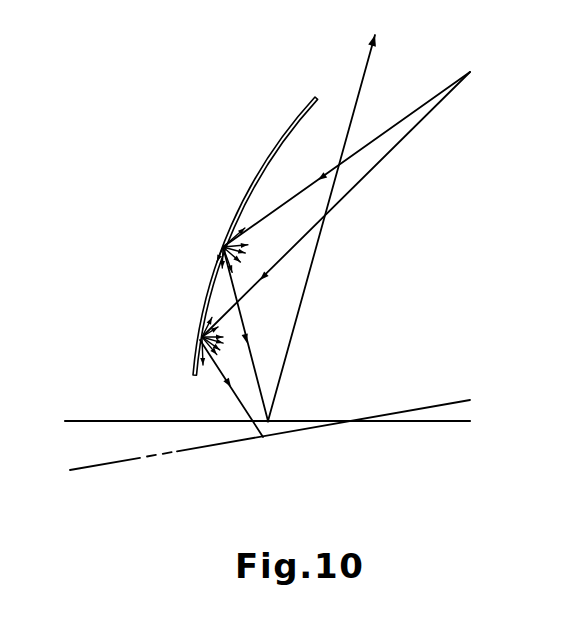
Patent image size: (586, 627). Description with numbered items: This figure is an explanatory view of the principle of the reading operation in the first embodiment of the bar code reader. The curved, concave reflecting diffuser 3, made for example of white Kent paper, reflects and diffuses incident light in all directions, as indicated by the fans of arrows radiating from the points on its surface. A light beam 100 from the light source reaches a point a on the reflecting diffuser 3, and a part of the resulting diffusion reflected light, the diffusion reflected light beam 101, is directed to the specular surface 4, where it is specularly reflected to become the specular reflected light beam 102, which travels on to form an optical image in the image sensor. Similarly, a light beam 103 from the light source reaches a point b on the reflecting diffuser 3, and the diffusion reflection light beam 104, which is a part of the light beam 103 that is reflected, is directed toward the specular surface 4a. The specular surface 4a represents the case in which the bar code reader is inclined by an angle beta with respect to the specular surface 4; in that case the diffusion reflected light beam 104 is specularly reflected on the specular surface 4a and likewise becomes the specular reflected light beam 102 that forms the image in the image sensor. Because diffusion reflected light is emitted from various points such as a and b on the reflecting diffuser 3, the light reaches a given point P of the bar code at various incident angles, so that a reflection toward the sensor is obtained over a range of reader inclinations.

The reflecting diffuser 3 is at (258, 165).
The light beam 100 is at (418, 108).
The diffusion reflected light beam 101 is at (255, 363).
The specular reflected light beam 102 is at (368, 60).
The light beam 103 is at (387, 157).
The diffusion reflection light beam 104 is at (237, 397).
The specular surface 4 is at (83, 420).
The specular surface 4a is at (97, 467).
The point on the reflecting diffuser a is at (215, 250).
The point on the reflecting diffuser b is at (196, 341).
The point of the bar code P is at (265, 440).